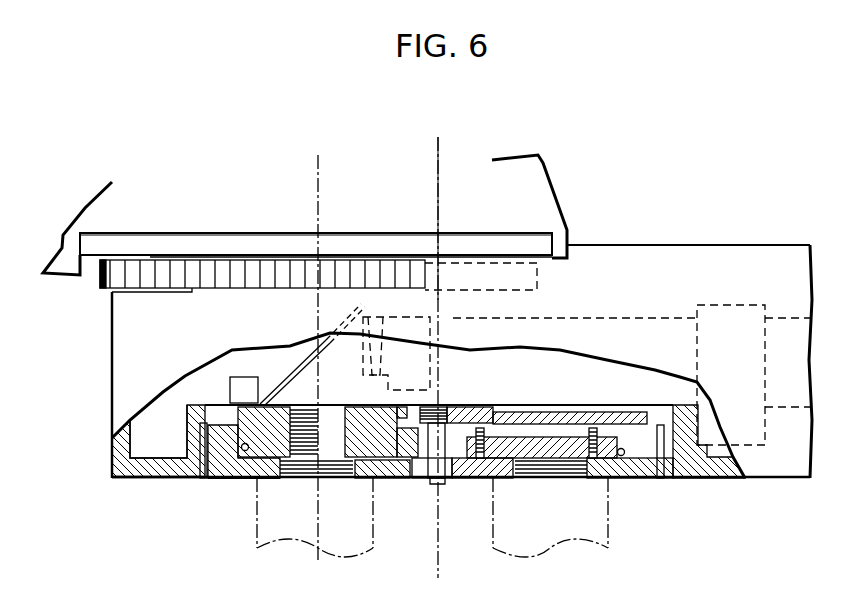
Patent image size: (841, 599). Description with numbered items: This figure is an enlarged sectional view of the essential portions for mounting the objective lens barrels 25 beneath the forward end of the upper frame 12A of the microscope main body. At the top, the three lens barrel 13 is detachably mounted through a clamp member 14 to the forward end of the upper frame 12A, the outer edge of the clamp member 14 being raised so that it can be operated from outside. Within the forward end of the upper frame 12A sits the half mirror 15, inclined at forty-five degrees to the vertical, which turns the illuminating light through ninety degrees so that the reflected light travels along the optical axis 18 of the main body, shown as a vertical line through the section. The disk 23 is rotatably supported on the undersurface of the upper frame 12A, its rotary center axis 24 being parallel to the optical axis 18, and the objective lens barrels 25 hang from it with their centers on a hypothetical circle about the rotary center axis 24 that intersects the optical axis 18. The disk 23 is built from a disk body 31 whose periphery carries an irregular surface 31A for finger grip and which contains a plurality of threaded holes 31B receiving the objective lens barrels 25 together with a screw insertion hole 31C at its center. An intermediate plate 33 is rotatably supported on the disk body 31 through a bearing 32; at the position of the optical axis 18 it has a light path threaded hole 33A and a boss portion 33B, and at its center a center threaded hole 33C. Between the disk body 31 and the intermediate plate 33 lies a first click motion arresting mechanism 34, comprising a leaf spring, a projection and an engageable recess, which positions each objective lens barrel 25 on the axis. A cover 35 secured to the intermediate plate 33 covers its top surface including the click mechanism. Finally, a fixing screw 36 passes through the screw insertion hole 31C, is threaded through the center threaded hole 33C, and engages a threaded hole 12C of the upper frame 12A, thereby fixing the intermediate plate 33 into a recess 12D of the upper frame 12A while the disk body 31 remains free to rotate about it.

The upper frame 12A is at (660, 245).
The threaded hole 12C is at (440, 410).
The recess 12D is at (200, 432).
The three lens barrel 13 is at (543, 165).
The clamp member 14 is at (100, 282).
The half mirror 15 is at (297, 352).
The optical axis of the main body 18 is at (318, 175).
The disk 23 is at (245, 480).
The rotary center axis 24 is at (438, 152).
The objective lens barrel 25 is at (250, 538).
The disk body 31 is at (220, 465).
The irregular surface 31A is at (182, 477).
The threaded hole 31B is at (353, 462).
The screw insertion hole 31C is at (420, 467).
The bearing 32 is at (627, 452).
The intermediate plate 33 is at (387, 412).
The light path threaded hole 33A is at (298, 400).
The boss portion 33B is at (357, 412).
The center threaded hole 33C is at (467, 470).
The first click motion arresting mechanism 34 is at (615, 425).
The cover 35 is at (525, 420).
The fixing screw 36 is at (437, 483).